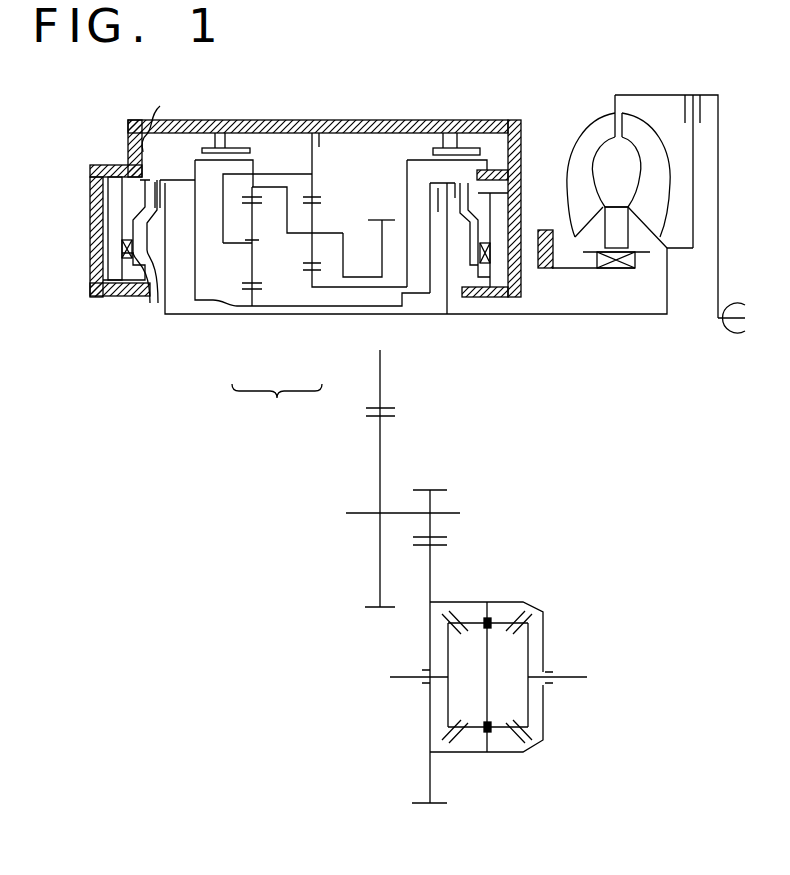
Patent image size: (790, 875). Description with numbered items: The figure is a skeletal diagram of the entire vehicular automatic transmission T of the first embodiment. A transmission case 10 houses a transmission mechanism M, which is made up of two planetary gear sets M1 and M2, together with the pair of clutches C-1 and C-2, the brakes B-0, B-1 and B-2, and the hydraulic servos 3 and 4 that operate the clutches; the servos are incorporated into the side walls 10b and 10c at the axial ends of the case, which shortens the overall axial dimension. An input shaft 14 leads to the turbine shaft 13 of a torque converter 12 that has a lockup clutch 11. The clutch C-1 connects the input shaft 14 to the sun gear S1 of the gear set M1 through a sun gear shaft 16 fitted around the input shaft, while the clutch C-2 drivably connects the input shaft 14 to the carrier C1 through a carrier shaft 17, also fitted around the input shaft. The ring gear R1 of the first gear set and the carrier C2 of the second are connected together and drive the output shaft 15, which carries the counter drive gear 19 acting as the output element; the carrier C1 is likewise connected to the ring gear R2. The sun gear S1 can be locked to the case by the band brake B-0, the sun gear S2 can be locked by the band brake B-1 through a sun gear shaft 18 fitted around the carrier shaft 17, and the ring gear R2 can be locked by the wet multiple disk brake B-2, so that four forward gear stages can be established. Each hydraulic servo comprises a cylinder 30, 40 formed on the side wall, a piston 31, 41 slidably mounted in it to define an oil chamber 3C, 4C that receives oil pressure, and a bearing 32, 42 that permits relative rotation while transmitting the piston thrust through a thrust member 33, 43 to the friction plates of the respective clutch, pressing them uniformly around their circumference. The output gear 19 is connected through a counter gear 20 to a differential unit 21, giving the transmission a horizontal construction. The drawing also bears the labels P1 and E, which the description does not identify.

The transmission case 10 is at (130, 134).
The side wall 10b is at (166, 118).
The side wall 10c is at (512, 128).
The automatic transmission T is at (486, 118).
The hydraulic servo 3 is at (94, 183).
The cylinder 30 is at (97, 206).
The oil chamber 3C is at (100, 286).
The piston 31 is at (115, 296).
The bearing 32 is at (120, 250).
The thrust member 33 is at (152, 304).
The clutch C-1 is at (167, 184).
The sun gear shaft 16 is at (176, 314).
The brake B-0 is at (203, 134).
The carrier C1 is at (242, 248).
The ring gear R1 is at (256, 186).
The first pinion gear P1 is at (265, 215).
The sun gear S1 is at (244, 304).
The planetary gear set M1 is at (251, 372).
The planetary gear set M2 is at (308, 372).
The transmission mechanism M is at (277, 407).
The brake B-2 is at (308, 134).
The ring gear R2 is at (316, 203).
The carrier C2 is at (316, 234).
The sun gear S2 is at (310, 303).
The output shaft 15 is at (360, 276).
The counter drive gear 19 is at (391, 219).
The carrier shaft 17 is at (362, 308).
The sun gear shaft 18 is at (400, 308).
The brake B-1 is at (440, 135).
The clutch C-2 is at (432, 190).
The input shaft 14 is at (464, 270).
The thrust member 43 is at (474, 296).
The piston 41 is at (500, 295).
The oil chamber 4C is at (518, 270).
The hydraulic servo 4 is at (516, 178).
The cylinder 40 is at (508, 198).
The bearing 42 is at (546, 232).
The turbine shaft 13 is at (616, 316).
The torque converter 12 is at (612, 104).
The lockup clutch 11 is at (704, 114).
The engine E is at (731, 318).
The counter gear 20 is at (404, 470).
The differential unit 21 is at (545, 604).